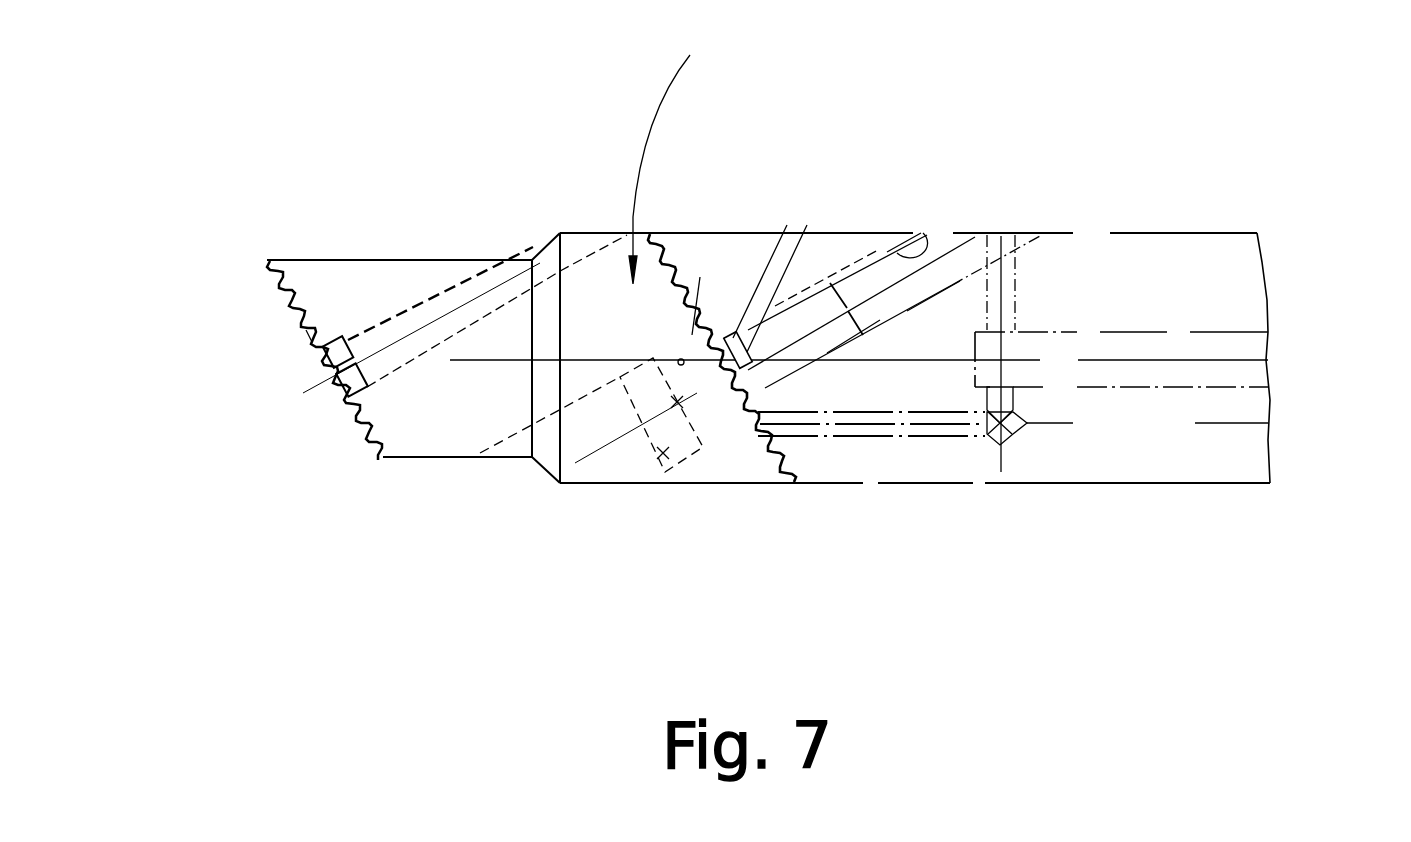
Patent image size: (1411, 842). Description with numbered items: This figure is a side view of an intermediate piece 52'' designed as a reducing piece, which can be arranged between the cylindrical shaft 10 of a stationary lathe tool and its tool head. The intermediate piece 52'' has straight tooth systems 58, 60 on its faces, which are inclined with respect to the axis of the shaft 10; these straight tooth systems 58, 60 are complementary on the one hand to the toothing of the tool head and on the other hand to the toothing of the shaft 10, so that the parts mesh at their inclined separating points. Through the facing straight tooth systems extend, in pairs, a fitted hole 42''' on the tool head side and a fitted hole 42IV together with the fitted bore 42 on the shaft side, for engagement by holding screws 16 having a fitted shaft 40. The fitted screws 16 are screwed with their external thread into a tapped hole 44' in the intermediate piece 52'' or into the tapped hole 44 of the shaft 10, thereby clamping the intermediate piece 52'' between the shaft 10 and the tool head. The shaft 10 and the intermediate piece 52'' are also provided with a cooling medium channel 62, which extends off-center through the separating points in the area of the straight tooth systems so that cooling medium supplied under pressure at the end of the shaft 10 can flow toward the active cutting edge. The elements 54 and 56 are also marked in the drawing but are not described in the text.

The cylindrical shaft 10 is at (1110, 283).
The fitted screw 16 is at (663, 480).
The fitted shaft 40 is at (713, 400).
The fitted bore 42 is at (787, 426).
The fitted hole 42''' is at (324, 431).
The fitted hole 42IV is at (681, 355).
The tapped hole 44 is at (894, 212).
The tapped hole 44' is at (465, 249).
The intermediate piece 52'' is at (689, 148).
The support piece 54 is at (296, 316).
The thread 56 is at (700, 277).
The straight tooth system 58 is at (312, 333).
The straight tooth system 60 is at (787, 225).
The cooling medium channel 62 is at (1193, 347).